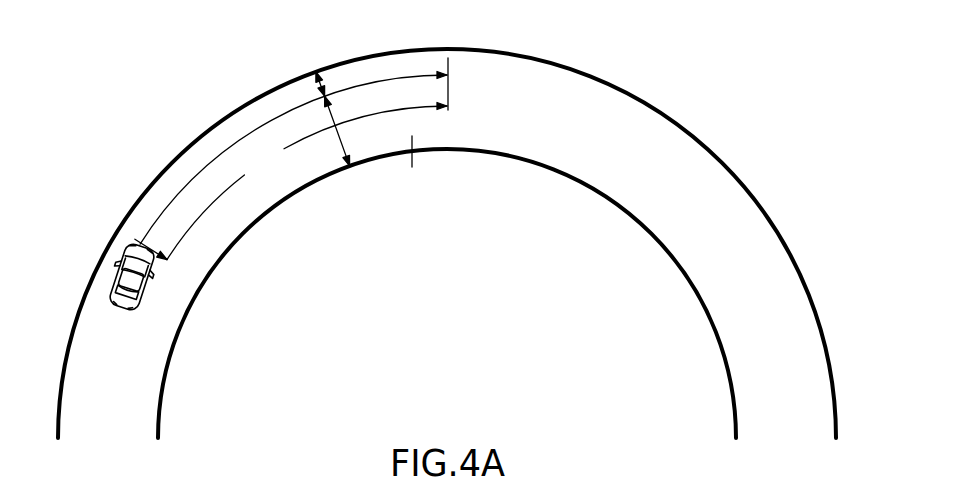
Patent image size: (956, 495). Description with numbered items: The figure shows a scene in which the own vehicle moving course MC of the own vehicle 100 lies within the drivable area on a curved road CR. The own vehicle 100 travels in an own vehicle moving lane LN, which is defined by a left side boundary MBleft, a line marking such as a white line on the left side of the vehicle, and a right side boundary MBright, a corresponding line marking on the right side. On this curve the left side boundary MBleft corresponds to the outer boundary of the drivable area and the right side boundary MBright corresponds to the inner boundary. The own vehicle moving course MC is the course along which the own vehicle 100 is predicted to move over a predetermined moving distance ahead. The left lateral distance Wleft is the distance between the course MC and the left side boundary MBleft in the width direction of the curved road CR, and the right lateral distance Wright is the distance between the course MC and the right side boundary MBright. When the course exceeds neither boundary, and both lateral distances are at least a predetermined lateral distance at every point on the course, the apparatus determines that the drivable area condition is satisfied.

The own vehicle 100 is at (121, 309).
The own vehicle moving lane LN is at (544, 117).
The left side boundary MBleft is at (107, 251).
The right side boundary MBright is at (212, 274).
The own vehicle moving course MC is at (235, 151).
The curved road CR is at (411, 167).
The left lateral distance Wleft is at (320, 79).
The right lateral distance Wright is at (336, 136).